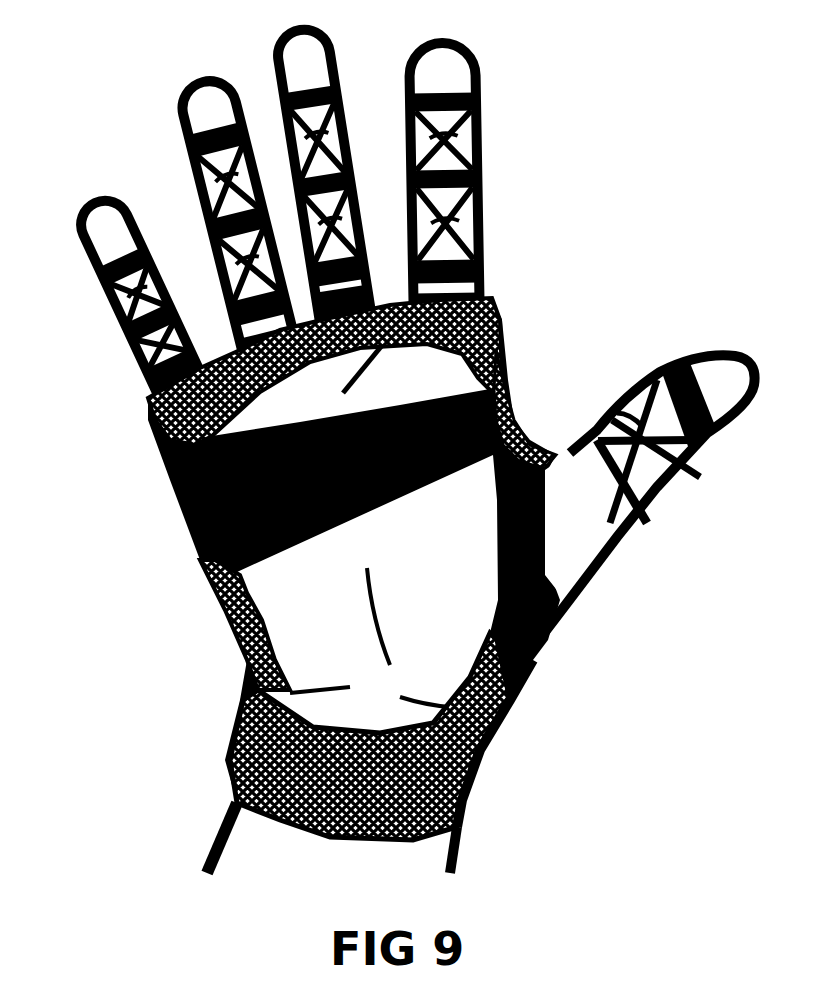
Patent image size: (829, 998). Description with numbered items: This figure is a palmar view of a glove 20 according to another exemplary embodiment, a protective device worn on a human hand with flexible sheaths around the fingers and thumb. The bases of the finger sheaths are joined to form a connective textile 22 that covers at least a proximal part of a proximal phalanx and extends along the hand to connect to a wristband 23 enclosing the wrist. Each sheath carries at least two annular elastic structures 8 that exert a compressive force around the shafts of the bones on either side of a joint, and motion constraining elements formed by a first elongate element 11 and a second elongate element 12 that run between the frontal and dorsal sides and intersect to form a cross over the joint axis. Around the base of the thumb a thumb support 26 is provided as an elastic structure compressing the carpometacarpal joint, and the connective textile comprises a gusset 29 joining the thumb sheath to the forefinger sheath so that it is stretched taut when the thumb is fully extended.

The glove 20 is at (90, 106).
The connective textile 22 is at (500, 332).
The gusset 29 is at (540, 445).
The second elongate element 12 is at (687, 383).
The annular elastic structures 8 is at (643, 520).
The first elongate element 11 is at (630, 440).
The thumb support 26 is at (533, 657).
The wristband 23 is at (473, 763).